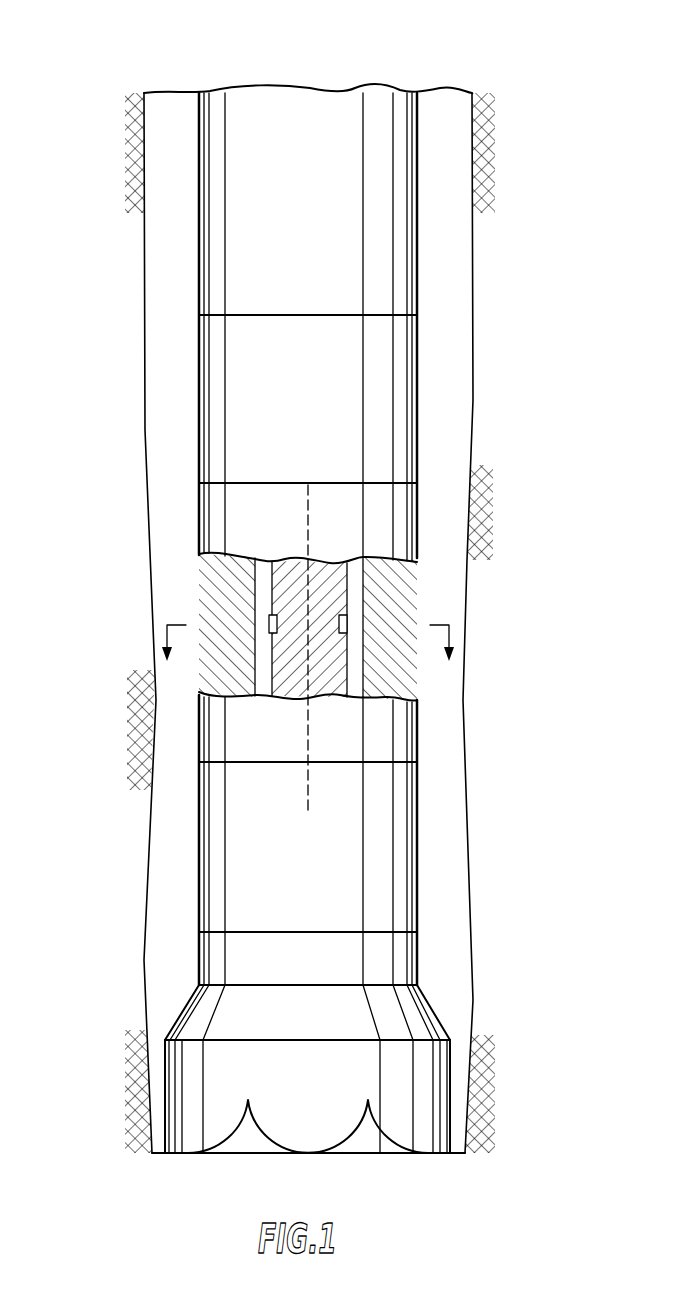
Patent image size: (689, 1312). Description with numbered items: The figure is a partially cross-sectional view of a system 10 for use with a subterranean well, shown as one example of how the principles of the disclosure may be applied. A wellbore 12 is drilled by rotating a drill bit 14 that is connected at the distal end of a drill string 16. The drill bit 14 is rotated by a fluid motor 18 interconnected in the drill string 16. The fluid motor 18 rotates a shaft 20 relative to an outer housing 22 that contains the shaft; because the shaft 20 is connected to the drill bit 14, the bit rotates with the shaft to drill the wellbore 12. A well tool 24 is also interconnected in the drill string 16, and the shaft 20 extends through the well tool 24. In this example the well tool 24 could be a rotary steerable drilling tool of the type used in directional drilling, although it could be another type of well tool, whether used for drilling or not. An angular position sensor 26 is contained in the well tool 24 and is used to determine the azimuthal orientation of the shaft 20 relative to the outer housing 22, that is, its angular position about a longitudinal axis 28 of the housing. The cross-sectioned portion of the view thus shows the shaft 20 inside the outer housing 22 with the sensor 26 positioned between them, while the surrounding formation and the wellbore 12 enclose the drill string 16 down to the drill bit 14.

The system 10 is at (342, 585).
The wellbore 12 is at (145, 432).
The drill bit 14 is at (432, 1005).
The drill string 16 is at (440, 402).
The fluid motor 18 is at (198, 235).
The shaft 20 is at (348, 667).
The outer housing 22 is at (198, 587).
The well tool 24 is at (192, 519).
The angular position sensor 26 is at (362, 618).
The longitudinal axis 28 is at (308, 472).